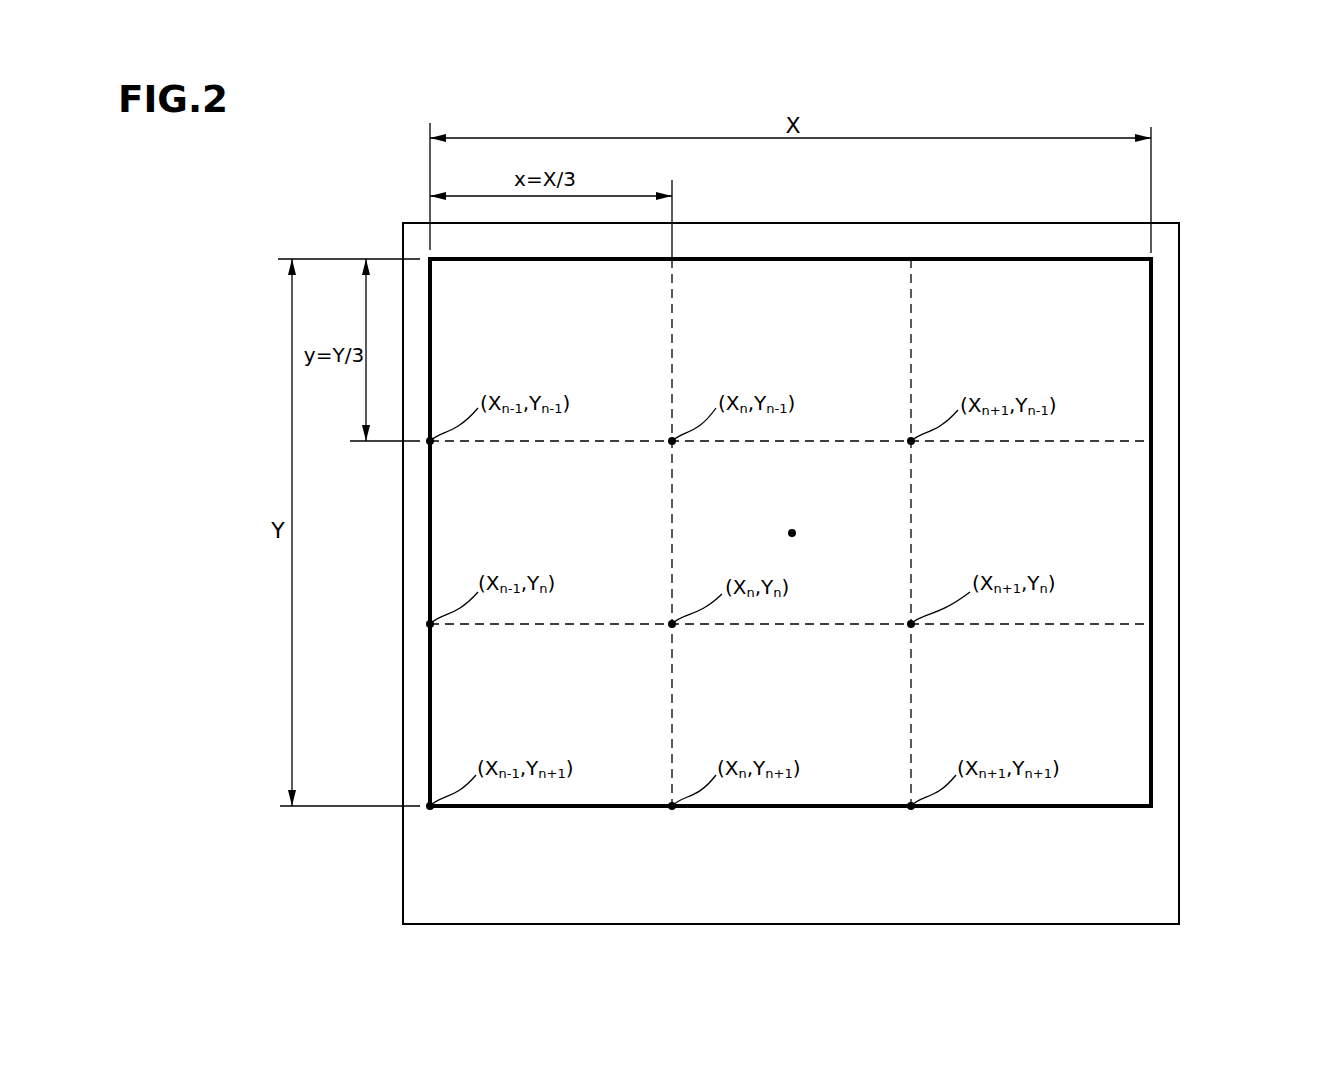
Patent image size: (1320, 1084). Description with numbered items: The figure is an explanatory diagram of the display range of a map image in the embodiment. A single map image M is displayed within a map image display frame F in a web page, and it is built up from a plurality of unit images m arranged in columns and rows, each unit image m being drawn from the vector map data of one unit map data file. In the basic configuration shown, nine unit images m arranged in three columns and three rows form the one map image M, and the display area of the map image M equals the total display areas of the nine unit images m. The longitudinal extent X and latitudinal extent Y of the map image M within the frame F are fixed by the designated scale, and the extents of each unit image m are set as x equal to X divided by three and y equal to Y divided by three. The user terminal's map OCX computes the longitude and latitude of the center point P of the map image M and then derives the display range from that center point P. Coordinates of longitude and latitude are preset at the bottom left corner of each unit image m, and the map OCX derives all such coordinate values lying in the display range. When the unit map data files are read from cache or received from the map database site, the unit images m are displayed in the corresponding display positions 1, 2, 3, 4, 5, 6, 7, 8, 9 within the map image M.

The map image display frame F is at (1181, 351).
The map image M is at (1153, 541).
The unit image m is at (1003, 290).
The center point P is at (792, 533).
The display position 1 is at (551, 350).
The display position 2 is at (791, 350).
The display position 3 is at (1031, 350).
The display position 4 is at (551, 532).
The display position 5 is at (791, 532).
The display position 6 is at (1031, 532).
The display position 7 is at (551, 715).
The display position 8 is at (791, 715).
The display position 9 is at (1031, 715).